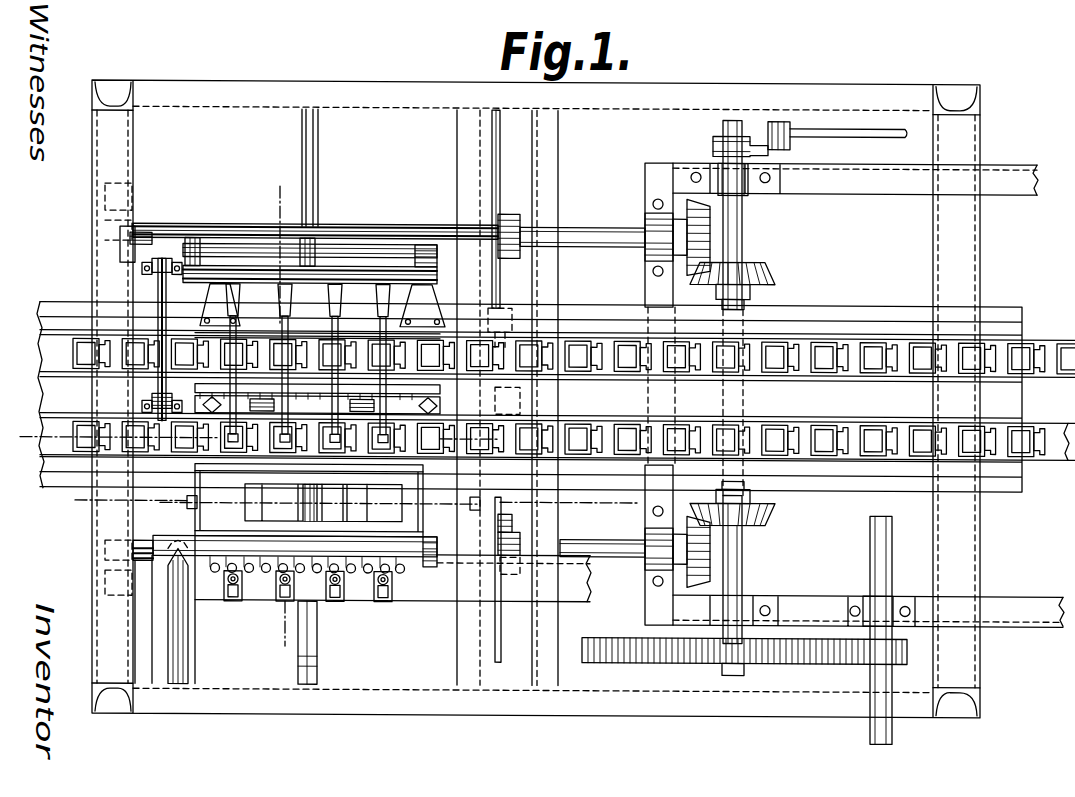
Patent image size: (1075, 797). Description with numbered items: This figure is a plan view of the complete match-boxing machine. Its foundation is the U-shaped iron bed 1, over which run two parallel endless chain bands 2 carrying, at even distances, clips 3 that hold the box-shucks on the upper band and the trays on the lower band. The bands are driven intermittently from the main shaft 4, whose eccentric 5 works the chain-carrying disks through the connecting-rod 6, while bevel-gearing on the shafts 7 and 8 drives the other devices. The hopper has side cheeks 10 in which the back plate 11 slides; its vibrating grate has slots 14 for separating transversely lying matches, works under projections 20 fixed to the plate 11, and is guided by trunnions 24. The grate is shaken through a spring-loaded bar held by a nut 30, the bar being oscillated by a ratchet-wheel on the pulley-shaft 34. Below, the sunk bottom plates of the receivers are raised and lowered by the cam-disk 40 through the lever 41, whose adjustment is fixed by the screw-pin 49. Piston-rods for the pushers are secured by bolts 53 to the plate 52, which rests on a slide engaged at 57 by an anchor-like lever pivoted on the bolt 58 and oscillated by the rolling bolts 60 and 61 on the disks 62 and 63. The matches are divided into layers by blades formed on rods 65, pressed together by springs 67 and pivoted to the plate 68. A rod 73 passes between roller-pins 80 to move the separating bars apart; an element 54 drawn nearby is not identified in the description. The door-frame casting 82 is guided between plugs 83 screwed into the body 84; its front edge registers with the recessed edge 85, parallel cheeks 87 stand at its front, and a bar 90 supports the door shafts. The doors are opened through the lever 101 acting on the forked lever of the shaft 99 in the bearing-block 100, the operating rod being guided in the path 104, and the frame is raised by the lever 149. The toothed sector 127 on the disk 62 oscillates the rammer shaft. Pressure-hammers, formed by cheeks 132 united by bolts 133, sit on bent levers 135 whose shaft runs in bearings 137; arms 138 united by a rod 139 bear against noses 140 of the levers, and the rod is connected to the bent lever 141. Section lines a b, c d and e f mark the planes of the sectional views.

The iron bed 1 is at (385, 96).
The endless chain bands 2 is at (1030, 343).
The clips 3 is at (557, 398).
The main shaft 4 is at (742, 228).
The eccentric 5 is at (732, 142).
The connecting-rod 6 is at (838, 134).
The shaft 7 is at (600, 550).
The shaft 8 is at (590, 240).
The side cheeks 10 is at (439, 526).
The plate 11 is at (309, 500).
The slots 14 is at (360, 515).
The projections 20 is at (327, 504).
The trunnions 24 is at (320, 502).
The nut 30 is at (281, 524).
The pulley-shaft 34 is at (892, 545).
The cam-disk 40 is at (275, 545).
The lever 41 is at (317, 636).
The screw-pin 49 is at (180, 540).
The plate 52 is at (438, 592).
The bolts 53 is at (404, 585).
The clamp 54 is at (375, 600).
The engagement point 57 is at (518, 330).
The pivot-bolt 58 is at (522, 400).
The rolling bolt 60 is at (505, 316).
The rolling bolt 61 is at (508, 514).
The disk 62 is at (500, 178).
The disk 63 is at (501, 622).
The rods 65 is at (243, 572).
The springs 67 is at (216, 572).
The plate 68 is at (433, 563).
The rod 73 is at (188, 630).
The roller-pins 80 is at (152, 572).
The casting 82 is at (338, 440).
The rectangular plugs 83 is at (435, 400).
The body 84 is at (290, 440).
The recessed edge 85 is at (317, 398).
The parallel cheeks 87 is at (402, 478).
The bar 90 is at (405, 378).
The shaft 99 is at (206, 304).
The bearing-block 100 is at (152, 272).
The lever 101 is at (150, 236).
The path 104 is at (120, 254).
The toothed sector 127 is at (490, 236).
The cheeks 132 is at (238, 430).
The bolts 133 is at (228, 440).
The bent levers 135 is at (340, 326).
The bearings 137 is at (438, 306).
The arms 138 is at (442, 256).
The rod 139 is at (355, 265).
The noses 140 is at (240, 250).
The bent lever 141 is at (200, 236).
The lever 149 is at (320, 158).
The section line a b a is at (282, 171).
The section line a b is at (284, 656).
The section line c d c is at (121, 500).
The section line c d is at (570, 497).
The section line e f e is at (114, 428).
The section line e f is at (470, 440).